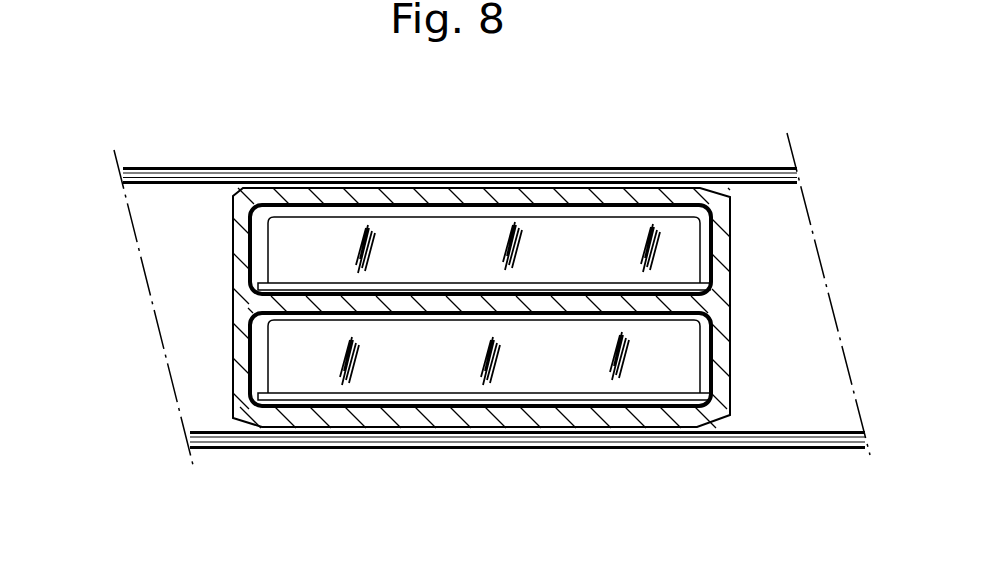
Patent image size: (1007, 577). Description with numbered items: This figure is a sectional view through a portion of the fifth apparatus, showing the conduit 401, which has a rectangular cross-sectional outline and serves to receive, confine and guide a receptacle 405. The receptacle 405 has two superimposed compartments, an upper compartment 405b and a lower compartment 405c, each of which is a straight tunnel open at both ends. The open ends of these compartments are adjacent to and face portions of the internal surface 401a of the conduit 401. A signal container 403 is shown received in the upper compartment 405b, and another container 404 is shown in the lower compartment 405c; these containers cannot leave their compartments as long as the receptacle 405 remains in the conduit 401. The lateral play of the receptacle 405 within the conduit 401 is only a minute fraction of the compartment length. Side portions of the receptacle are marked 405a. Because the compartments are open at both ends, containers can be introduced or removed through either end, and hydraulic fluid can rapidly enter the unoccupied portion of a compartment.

The conduit 401 is at (382, 169).
The internal surface of the conduit 401a is at (195, 192).
The container 403 is at (587, 242).
The container 404 is at (527, 373).
The receptacle 405 is at (485, 307).
The housing side wall 405a is at (242, 252).
The upper compartment 405b is at (440, 210).
The lower compartment 405c is at (415, 410).